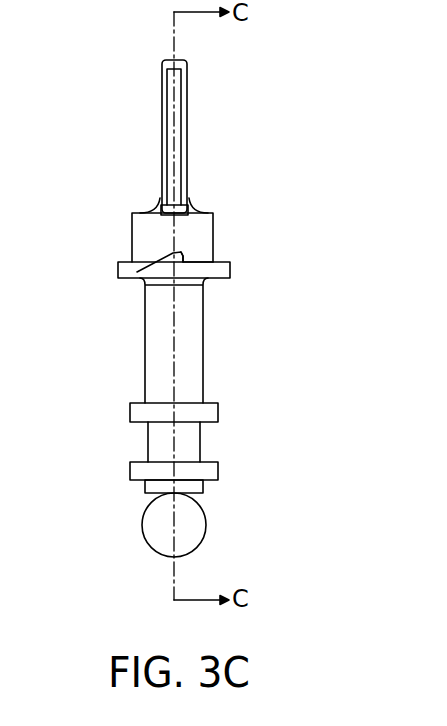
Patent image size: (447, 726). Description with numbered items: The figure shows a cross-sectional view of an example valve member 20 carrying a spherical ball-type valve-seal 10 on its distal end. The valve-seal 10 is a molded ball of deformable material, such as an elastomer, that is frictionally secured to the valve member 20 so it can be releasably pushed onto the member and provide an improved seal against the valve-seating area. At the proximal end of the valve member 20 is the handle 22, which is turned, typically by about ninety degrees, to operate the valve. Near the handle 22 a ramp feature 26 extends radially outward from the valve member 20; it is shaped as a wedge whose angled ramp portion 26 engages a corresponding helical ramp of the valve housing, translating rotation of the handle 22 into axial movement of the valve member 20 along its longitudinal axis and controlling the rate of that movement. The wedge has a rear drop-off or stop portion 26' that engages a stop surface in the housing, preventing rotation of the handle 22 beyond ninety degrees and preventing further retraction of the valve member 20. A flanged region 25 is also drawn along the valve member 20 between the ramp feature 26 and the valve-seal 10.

The valve-seal 10 is at (207, 530).
The valve member 20 is at (145, 350).
The handle 22 is at (162, 133).
The flange assembly 25 is at (121, 421).
The ramp feature 26 is at (131, 285).
The rear stop portion 26' is at (229, 244).